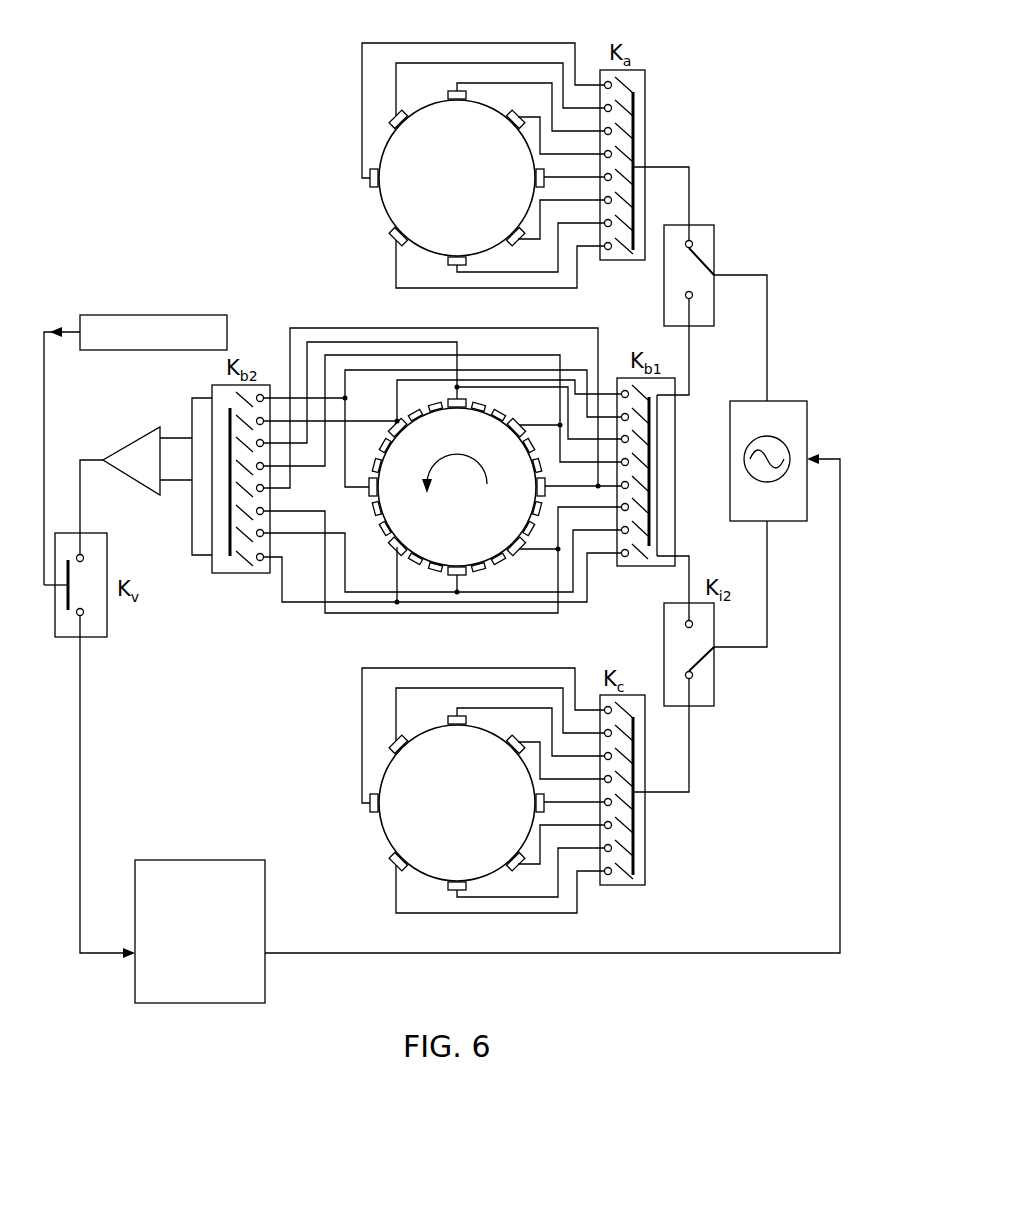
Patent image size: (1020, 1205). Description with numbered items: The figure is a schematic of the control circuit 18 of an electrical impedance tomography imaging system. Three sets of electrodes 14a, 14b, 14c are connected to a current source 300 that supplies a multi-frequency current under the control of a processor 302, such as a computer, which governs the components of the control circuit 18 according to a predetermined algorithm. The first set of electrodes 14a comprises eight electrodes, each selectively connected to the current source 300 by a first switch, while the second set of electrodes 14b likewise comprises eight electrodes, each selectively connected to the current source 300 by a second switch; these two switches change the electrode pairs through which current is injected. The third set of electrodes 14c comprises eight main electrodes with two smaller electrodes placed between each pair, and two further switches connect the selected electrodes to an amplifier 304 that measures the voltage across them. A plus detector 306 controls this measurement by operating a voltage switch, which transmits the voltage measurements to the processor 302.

The control circuit 18 is at (755, 143).
The first set of electrodes 14a is at (477, 187).
The second set of electrodes 14b is at (477, 812).
The third set of electrodes 14c is at (476, 496).
The current source 300 is at (787, 401).
The processor 302 is at (182, 945).
The amplifier 304 is at (138, 442).
The plus detector 306 is at (203, 315).